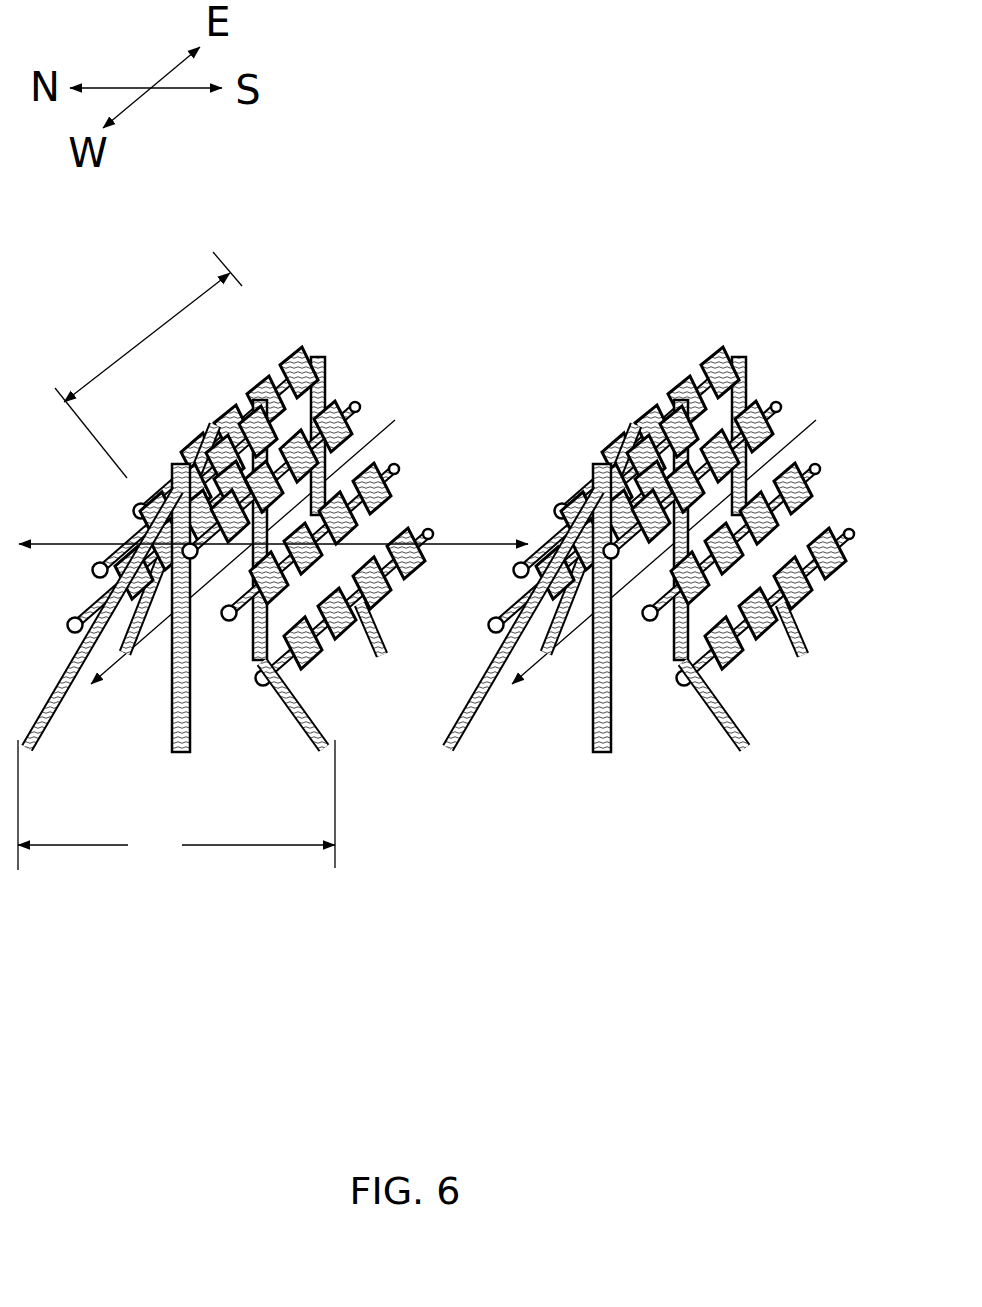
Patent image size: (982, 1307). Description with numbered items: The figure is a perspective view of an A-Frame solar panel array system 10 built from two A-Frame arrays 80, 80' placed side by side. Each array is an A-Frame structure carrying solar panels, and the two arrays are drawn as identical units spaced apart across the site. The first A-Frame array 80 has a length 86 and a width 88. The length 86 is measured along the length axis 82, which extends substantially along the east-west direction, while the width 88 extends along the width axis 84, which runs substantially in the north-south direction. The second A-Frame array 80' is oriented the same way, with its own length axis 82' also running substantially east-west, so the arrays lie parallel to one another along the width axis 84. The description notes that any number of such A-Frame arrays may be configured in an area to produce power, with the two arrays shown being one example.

The A-Frame solar panel array system 10 is at (440, 510).
The A-Frame array 80 is at (230, 580).
The A-Frame array 80' is at (651, 602).
The length axis 82 is at (243, 496).
The length axis 82' is at (664, 496).
The width axis 84 is at (466, 544).
The length 86 is at (148, 365).
The width 88 is at (176, 805).